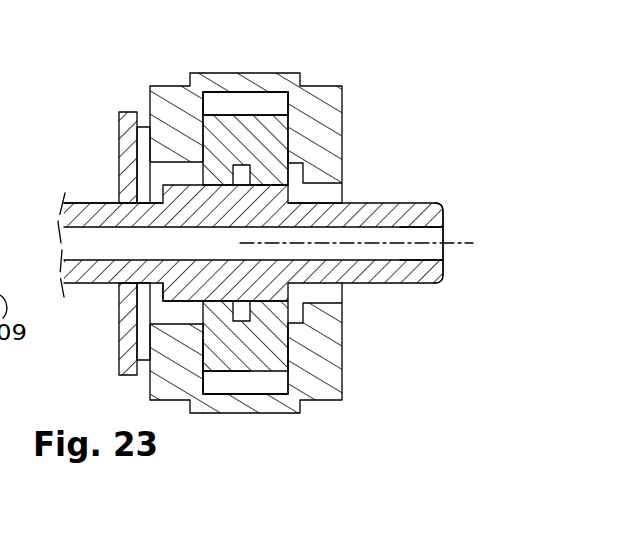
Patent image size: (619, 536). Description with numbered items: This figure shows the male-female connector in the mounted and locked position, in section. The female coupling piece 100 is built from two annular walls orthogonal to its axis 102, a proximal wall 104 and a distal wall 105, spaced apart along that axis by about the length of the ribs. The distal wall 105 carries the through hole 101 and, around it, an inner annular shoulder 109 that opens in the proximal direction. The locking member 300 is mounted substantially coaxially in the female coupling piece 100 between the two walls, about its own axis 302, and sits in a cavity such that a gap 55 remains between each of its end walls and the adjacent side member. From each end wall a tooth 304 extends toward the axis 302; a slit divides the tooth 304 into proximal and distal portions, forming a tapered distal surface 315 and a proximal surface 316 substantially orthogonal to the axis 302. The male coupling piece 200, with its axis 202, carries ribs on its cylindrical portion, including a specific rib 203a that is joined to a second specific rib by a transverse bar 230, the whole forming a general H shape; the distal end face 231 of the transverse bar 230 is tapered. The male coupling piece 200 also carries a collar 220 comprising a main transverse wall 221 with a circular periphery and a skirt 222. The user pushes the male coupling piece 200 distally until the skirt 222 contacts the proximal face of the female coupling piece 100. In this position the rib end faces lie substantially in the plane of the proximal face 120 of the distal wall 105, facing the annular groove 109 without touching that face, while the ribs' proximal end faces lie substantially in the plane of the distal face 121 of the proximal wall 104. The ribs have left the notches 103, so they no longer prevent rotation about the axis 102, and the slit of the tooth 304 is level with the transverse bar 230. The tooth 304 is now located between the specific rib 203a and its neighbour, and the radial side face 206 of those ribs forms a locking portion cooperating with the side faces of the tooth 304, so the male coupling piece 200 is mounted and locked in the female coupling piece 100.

The female coupling piece 100 is at (252, 232).
The through hole 101 is at (322, 194).
The axis 102 is at (467, 248).
The notches 103 is at (183, 313).
The proximal wall 104 is at (167, 112).
The distal wall 105 is at (306, 110).
The inner annular shoulder 109 is at (338, 348).
The proximal face 120 is at (340, 380).
The distal face 121 is at (218, 377).
The male coupling piece 200 is at (103, 200).
The axis 202 is at (439, 243).
The specific rib 203a is at (221, 192).
The radial side face 206 is at (0, 204).
The collar 220 is at (119, 134).
The main transverse wall 221 is at (124, 325).
The skirt 222 is at (141, 368).
The transverse bar 230 is at (260, 330).
The distal end face 231 is at (287, 347).
The locking member 300 is at (265, 113).
The axis 302 is at (421, 243).
The tooth 304 is at (268, 174).
The distal surface 315 is at (248, 175).
The proximal surface 316 is at (233, 175).
The gap 55 is at (242, 102).